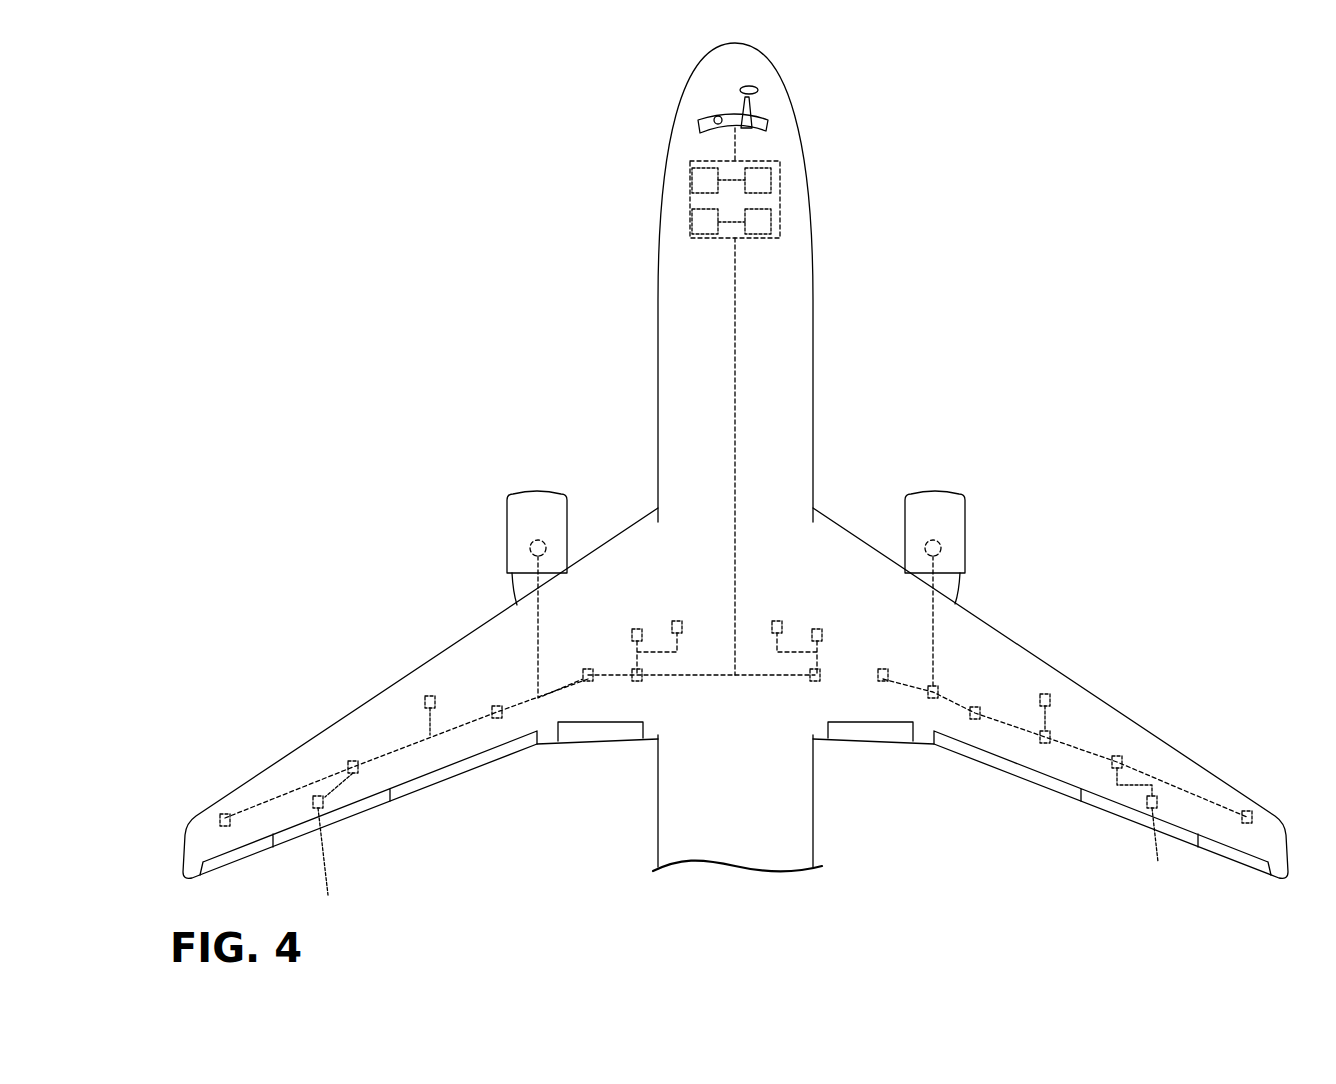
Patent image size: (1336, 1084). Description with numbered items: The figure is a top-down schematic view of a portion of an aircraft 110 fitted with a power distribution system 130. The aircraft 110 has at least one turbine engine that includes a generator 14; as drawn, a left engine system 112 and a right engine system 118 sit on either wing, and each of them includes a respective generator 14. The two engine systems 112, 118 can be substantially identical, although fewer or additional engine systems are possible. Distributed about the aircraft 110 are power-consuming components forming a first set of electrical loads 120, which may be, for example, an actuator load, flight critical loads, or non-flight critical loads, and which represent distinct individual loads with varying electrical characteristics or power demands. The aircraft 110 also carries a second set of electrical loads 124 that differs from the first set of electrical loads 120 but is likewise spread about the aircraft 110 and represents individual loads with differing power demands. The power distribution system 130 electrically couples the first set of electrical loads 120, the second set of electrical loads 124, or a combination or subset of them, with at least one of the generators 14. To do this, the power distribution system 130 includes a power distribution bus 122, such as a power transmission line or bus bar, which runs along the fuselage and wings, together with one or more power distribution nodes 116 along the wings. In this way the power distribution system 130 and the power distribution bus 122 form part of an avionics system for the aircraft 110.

The aircraft 110 is at (530, 74).
The left engine system 112 is at (537, 497).
The right engine system 118 is at (947, 500).
The generator 14 is at (548, 542).
The power distribution node 116 is at (637, 681).
The first set of electrical loads 120 is at (692, 186).
The power distribution bus 122 is at (732, 350).
The second set of electrical loads 124 is at (690, 230).
The power distribution system 130 is at (960, 664).